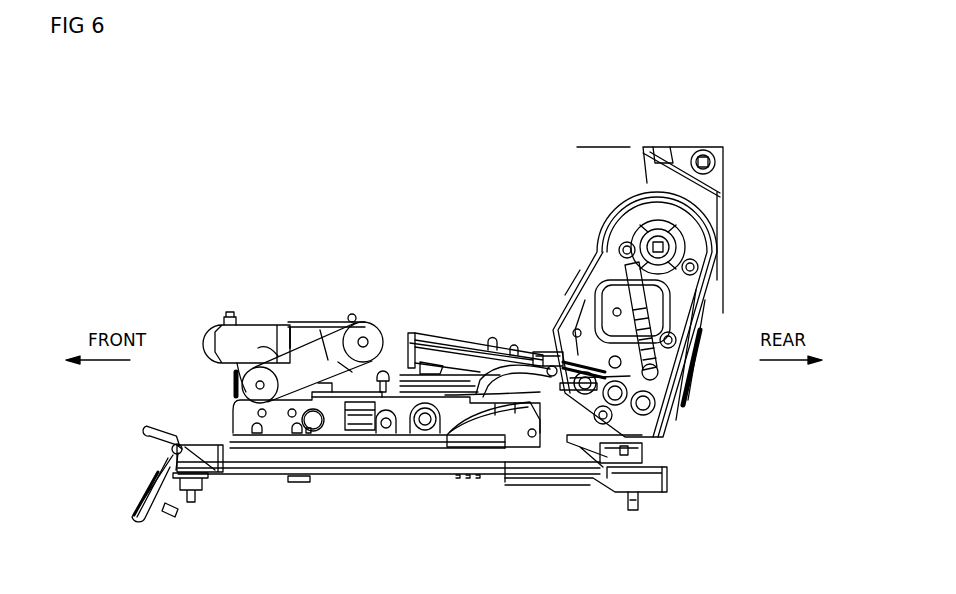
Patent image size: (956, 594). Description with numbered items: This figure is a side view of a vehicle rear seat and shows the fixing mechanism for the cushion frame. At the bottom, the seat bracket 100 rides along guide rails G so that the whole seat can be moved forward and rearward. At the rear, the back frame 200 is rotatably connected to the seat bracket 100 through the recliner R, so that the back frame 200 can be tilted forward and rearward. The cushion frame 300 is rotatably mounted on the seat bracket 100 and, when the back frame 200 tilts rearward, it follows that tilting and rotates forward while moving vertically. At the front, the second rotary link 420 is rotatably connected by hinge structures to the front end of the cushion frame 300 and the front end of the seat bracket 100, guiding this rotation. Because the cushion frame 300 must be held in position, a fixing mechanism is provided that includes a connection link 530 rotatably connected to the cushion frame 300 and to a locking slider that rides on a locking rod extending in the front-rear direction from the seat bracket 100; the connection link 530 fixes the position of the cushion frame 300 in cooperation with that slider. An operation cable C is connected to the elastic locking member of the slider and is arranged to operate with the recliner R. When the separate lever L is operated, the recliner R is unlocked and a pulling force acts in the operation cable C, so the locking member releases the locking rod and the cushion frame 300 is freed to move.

The seat bracket 100 is at (402, 408).
The back frame 200 is at (677, 167).
The cushion frame 300 is at (443, 345).
The second rotary link 420 is at (302, 367).
The connection link 530 is at (340, 385).
The operation cable C is at (557, 357).
The guide rail G is at (212, 462).
The lever L is at (510, 415).
The recliner R is at (680, 252).